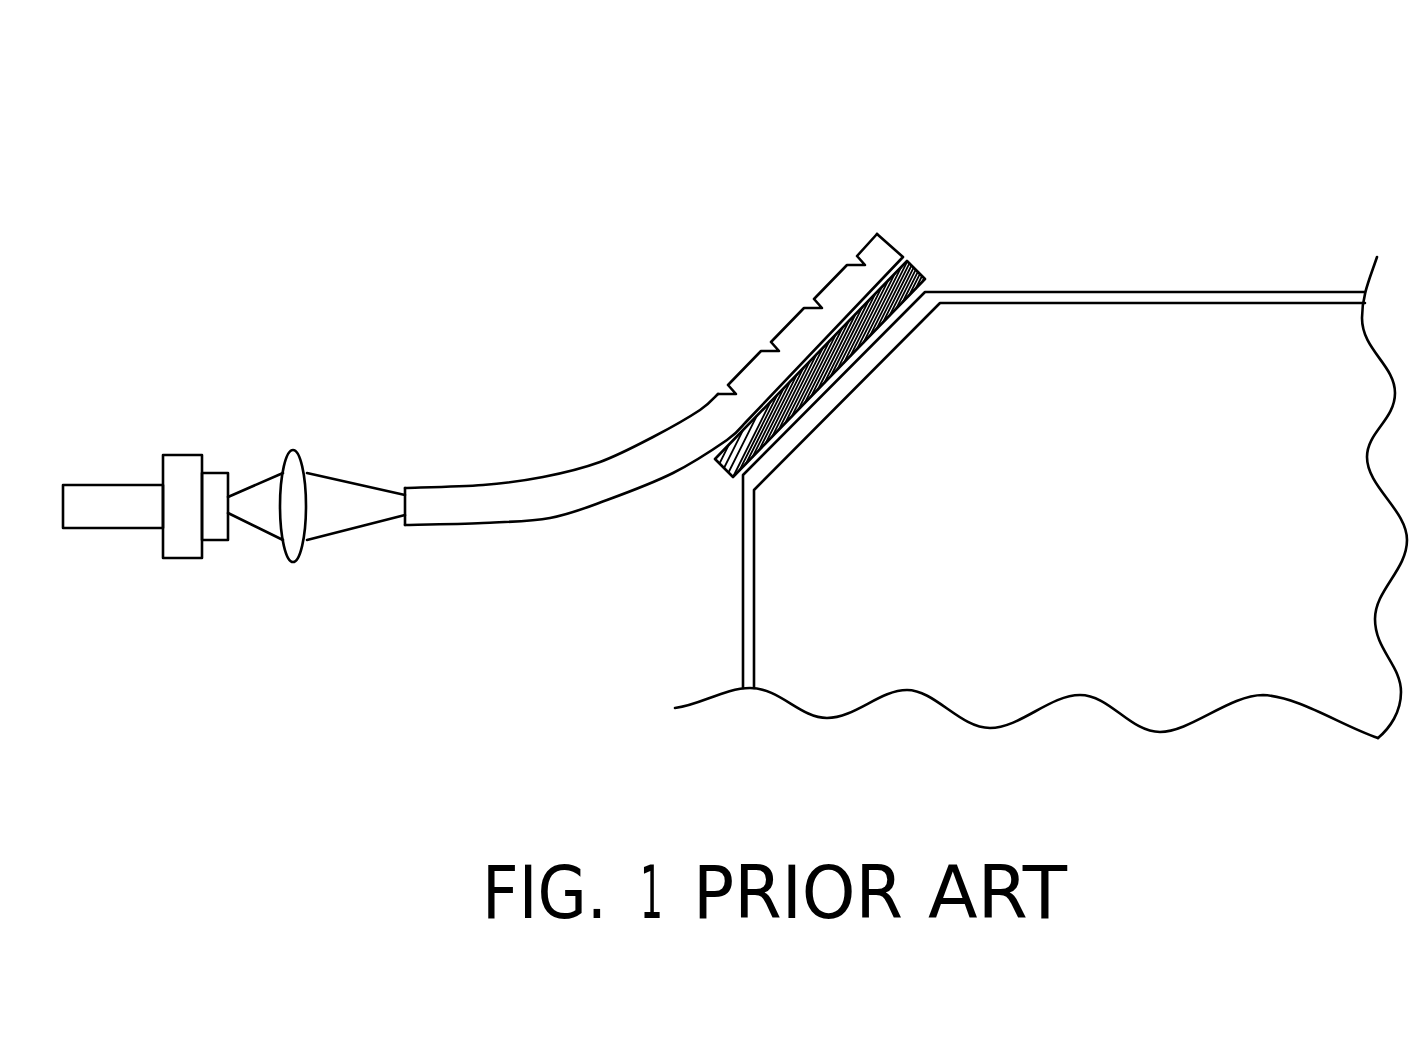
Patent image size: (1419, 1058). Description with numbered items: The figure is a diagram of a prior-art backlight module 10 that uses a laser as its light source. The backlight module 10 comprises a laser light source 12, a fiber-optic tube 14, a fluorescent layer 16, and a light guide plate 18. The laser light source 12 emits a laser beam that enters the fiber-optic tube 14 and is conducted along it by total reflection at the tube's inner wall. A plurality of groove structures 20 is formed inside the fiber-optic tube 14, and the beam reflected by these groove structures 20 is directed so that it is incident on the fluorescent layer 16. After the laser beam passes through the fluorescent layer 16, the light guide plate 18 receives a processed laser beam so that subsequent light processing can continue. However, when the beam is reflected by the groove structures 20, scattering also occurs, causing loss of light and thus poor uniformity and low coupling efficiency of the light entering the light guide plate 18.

The backlight module 10 is at (549, 114).
The laser light source 12 is at (183, 463).
The fiber-optic tube 14 is at (467, 507).
The fluorescent layer 16 is at (920, 272).
The light guide plate 18 is at (1048, 317).
The groove structures 20 is at (728, 388).